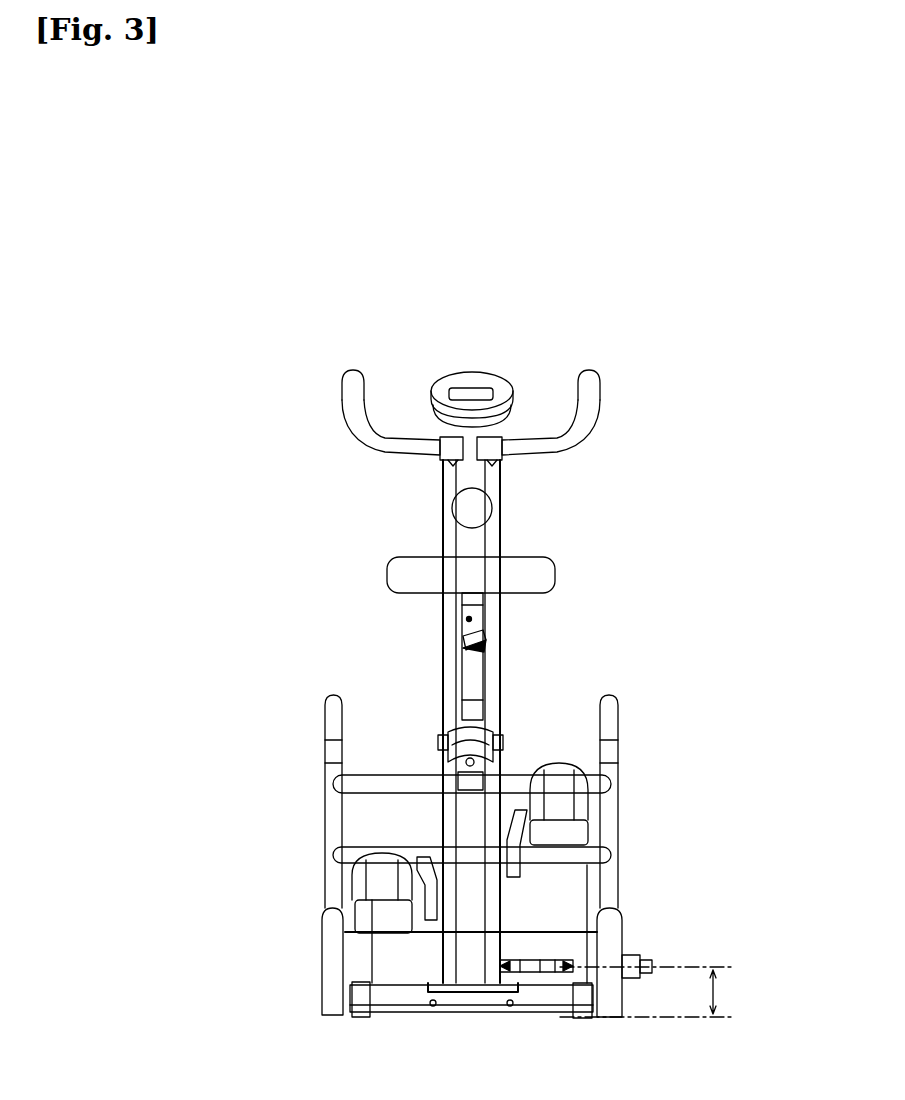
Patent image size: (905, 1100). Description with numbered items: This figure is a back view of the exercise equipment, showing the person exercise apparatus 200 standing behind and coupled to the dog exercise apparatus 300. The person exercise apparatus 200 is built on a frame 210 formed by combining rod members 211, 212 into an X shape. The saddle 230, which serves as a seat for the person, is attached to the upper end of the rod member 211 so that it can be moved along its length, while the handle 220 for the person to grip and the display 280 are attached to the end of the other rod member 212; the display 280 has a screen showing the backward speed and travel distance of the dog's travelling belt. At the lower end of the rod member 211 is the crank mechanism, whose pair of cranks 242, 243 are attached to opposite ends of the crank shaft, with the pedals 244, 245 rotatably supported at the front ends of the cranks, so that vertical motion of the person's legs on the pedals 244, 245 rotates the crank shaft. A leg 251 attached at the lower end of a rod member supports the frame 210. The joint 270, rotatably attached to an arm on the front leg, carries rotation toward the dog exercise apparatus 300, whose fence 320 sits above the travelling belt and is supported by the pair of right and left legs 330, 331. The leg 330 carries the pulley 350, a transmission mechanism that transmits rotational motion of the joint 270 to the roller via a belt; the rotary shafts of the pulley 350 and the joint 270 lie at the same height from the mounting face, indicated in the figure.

The person exercise apparatus 200 is at (534, 647).
The frame 210 is at (533, 714).
The rod member 211 is at (477, 605).
The rod member 212 is at (503, 673).
The handle 220 is at (583, 432).
The saddle 230 is at (557, 577).
The crank 242 is at (560, 870).
The crank 243 is at (368, 875).
The pedal 244 is at (592, 828).
The pedal 245 is at (368, 918).
The leg 251 is at (556, 998).
The joint 270 is at (520, 975).
The display 280 is at (476, 385).
The dog exercise apparatus 300 is at (492, 873).
The fence 320 is at (612, 755).
The leg 330 is at (610, 1005).
The leg 331 is at (330, 992).
The pulley 350 is at (652, 962).